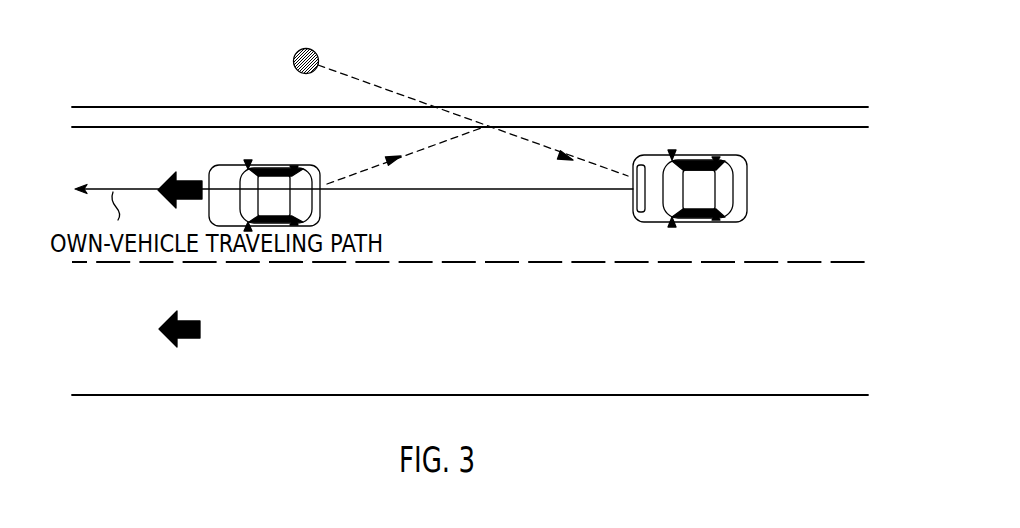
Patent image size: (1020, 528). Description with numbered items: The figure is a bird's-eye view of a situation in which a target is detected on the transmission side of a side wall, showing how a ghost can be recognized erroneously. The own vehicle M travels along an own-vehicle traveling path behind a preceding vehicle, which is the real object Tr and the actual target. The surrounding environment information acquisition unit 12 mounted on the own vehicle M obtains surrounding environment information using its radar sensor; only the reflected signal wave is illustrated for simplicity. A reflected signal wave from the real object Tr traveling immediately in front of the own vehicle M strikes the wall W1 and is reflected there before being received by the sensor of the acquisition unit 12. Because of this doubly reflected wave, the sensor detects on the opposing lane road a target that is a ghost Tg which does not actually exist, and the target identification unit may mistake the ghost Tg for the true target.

The ghost Tg is at (315, 48).
The real object Tr is at (320, 217).
The wall W1 is at (92, 128).
The own vehicle M is at (717, 224).
The surrounding environment information acquisition unit 12 is at (648, 197).